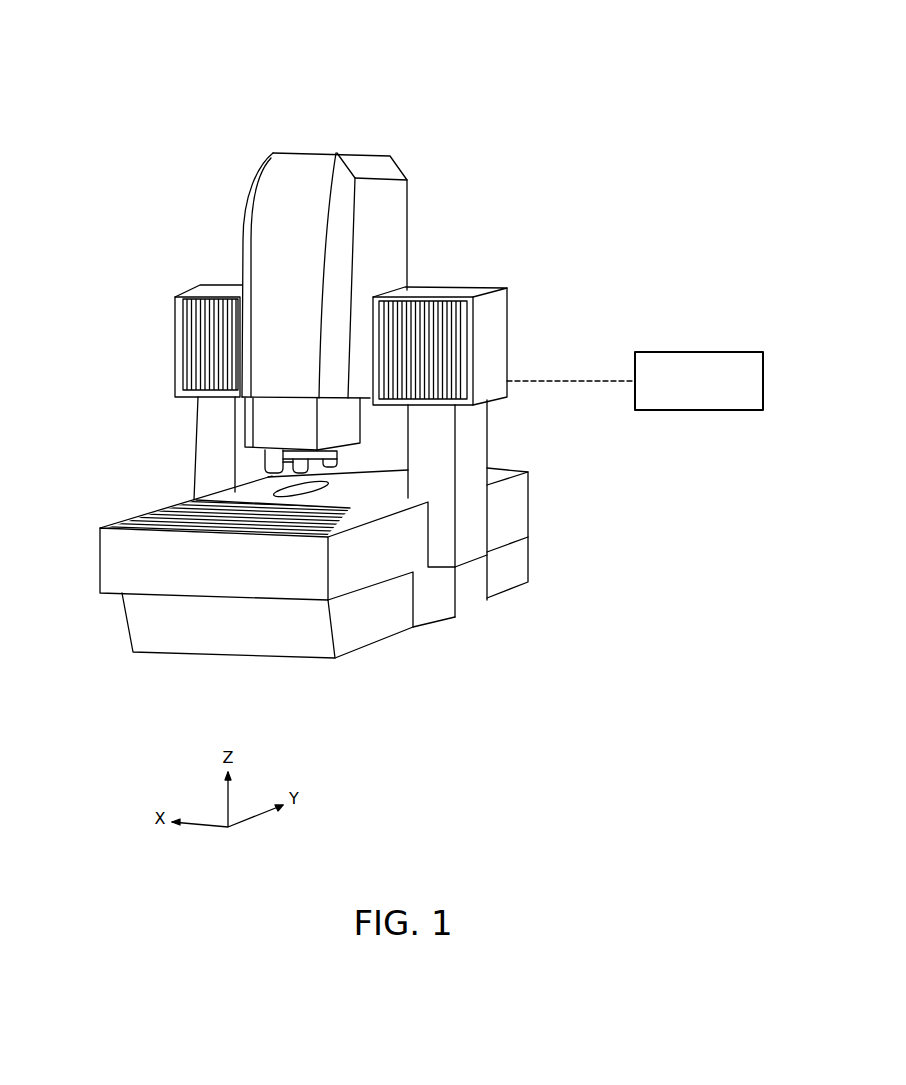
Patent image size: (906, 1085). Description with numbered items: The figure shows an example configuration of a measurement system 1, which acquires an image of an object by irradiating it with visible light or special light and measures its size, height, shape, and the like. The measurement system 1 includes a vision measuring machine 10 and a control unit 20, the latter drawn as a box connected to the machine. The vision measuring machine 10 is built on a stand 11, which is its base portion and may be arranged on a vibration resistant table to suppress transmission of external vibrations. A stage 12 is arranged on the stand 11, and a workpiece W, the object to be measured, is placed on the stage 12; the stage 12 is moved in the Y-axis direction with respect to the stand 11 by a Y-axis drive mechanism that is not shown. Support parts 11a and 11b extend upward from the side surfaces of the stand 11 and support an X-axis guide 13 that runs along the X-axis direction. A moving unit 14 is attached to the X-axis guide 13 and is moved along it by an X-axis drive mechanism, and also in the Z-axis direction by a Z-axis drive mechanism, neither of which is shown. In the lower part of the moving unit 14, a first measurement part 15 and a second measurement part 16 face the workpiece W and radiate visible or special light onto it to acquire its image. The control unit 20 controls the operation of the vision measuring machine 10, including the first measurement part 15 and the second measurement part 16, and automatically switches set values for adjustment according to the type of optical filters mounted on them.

The measurement system 1 is at (411, 337).
The vision measuring machine 10 is at (362, 135).
The stand 11 is at (122, 562).
The support part 11a is at (487, 433).
The support part 11b is at (197, 432).
The stage 12 is at (222, 503).
The X-axis guide 13 is at (437, 290).
The moving unit 14 is at (295, 153).
The first measurement part 15 is at (310, 466).
The second measurement part 16 is at (265, 463).
The control unit 20 is at (748, 352).
The workpiece W is at (332, 485).